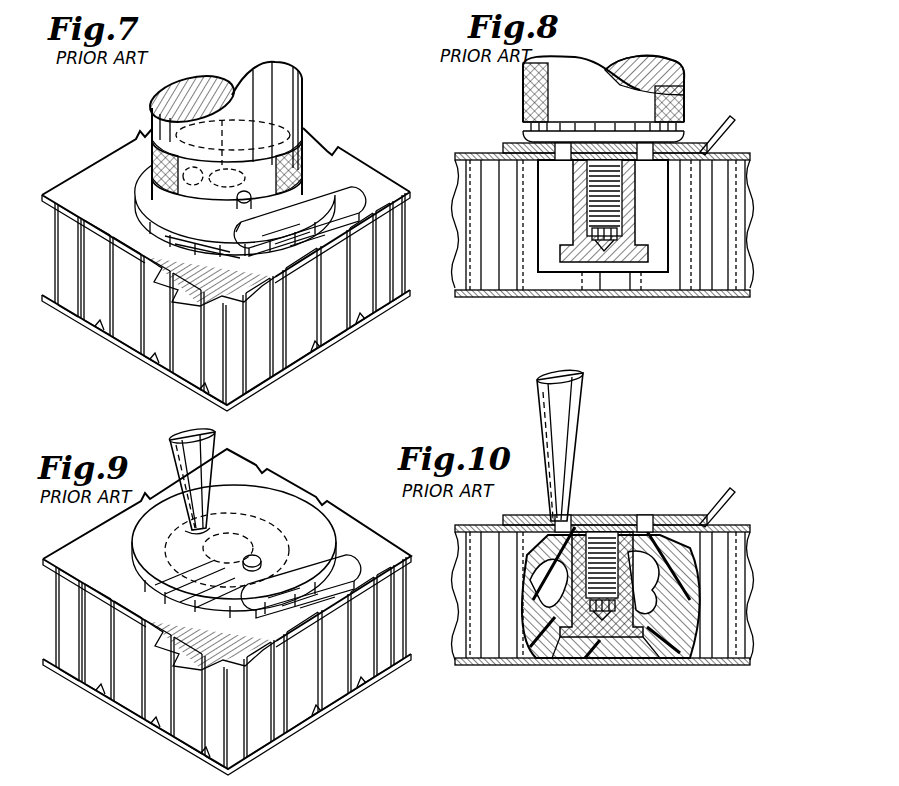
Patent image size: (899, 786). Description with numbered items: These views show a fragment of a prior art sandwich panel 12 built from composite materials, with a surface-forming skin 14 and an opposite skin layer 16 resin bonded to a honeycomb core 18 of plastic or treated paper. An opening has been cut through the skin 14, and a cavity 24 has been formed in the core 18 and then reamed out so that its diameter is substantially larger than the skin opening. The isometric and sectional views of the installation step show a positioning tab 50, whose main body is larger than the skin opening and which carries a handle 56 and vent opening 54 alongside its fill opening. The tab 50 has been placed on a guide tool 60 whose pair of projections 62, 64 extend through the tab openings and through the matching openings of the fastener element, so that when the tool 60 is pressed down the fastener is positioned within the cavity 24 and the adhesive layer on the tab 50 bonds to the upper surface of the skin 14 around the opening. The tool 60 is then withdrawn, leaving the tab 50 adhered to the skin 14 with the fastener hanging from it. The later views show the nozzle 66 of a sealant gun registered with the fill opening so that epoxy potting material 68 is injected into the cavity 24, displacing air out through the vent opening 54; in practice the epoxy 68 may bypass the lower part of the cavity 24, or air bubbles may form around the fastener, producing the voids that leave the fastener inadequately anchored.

In FIG. 7, the sandwich panel 12 is at (338, 360).
In FIG. 8, the sandwich panel 12 is at (468, 322).
In FIG. 9, the sandwich panel 12 is at (160, 744).
In FIG. 10, the sandwich panel 12 is at (592, 667).
In FIG. 7, the skin 14 is at (100, 178).
In FIG. 8, the skin 14 is at (471, 153).
In FIG. 9, the skin 14 is at (80, 552).
In FIG. 10, the skin 14 is at (738, 525).
In FIG. 7, the skin layer 16 is at (120, 348).
In FIG. 8, the skin layer 16 is at (522, 298).
In FIG. 9, the skin layer 16 is at (122, 712).
In FIG. 10, the skin layer 16 is at (496, 666).
In FIG. 7, the honeycomb core 18 is at (78, 318).
In FIG. 8, the honeycomb core 18 is at (676, 298).
In FIG. 9, the honeycomb core 18 is at (330, 672).
In FIG. 10, the honeycomb core 18 is at (488, 640).
In FIG. 8, the cavity 24 is at (560, 190).
In FIG. 10, the cavity 24 is at (688, 650).
In FIG. 7, the positioning tab 50 is at (323, 150).
In FIG. 9, the positioning tab 50 is at (275, 505).
In FIG. 10, the positioning tab 50 is at (600, 516).
In FIG. 9, the vent opening 54 is at (262, 558).
In FIG. 7, the handle 56 is at (366, 178).
In FIG. 8, the handle 56 is at (732, 117).
In FIG. 9, the handle 56 is at (368, 546).
In FIG. 10, the handle 56 is at (720, 492).
In FIG. 7, the guide tool 60 is at (290, 82).
In FIG. 8, the guide tool 60 is at (686, 80).
In FIG. 8, the projection 62 is at (560, 140).
In FIG. 8, the projection 64 is at (712, 159).
In FIG. 9, the nozzle 66 is at (208, 468).
In FIG. 10, the nozzle 66 is at (566, 452).
In FIG. 10, the epoxy potting material 68 is at (536, 594).